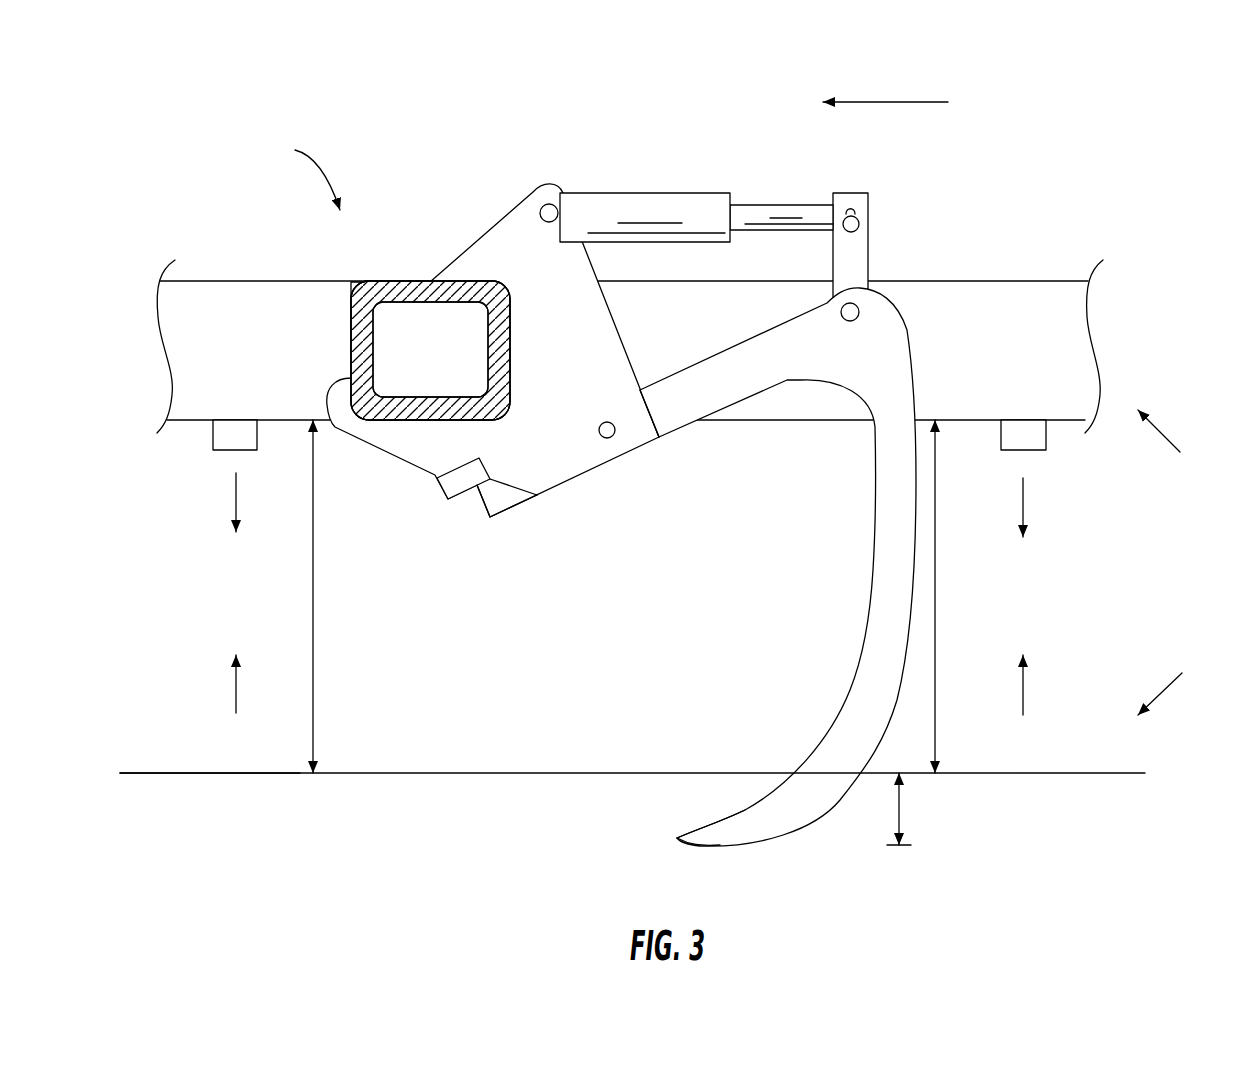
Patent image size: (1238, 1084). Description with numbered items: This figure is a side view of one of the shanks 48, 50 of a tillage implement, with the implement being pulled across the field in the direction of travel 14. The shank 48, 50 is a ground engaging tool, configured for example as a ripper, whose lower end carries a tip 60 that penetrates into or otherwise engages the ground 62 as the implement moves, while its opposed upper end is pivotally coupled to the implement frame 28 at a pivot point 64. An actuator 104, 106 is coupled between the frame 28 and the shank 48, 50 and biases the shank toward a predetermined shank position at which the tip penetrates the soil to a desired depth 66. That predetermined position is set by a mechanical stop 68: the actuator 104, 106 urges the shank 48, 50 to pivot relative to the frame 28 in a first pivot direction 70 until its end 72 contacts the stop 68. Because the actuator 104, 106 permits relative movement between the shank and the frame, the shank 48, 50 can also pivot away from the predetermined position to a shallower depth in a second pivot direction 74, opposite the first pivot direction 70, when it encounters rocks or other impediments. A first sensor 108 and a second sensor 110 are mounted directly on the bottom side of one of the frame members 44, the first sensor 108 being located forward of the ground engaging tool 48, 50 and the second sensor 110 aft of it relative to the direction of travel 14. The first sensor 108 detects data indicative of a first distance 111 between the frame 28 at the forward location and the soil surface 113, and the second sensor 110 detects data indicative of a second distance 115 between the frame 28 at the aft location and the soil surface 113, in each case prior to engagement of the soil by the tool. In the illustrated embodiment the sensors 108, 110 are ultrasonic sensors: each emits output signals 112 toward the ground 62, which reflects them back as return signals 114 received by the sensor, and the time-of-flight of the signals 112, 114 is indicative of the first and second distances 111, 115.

The direction of travel 14 is at (893, 102).
The implement frame 28 is at (301, 172).
The frame member 44 is at (255, 281).
The shank 48 is at (778, 567).
The shank 50 is at (873, 597).
The tip 60 is at (677, 838).
The ground 62 is at (500, 773).
The pivot point 64 is at (613, 437).
The desired depth 66 is at (900, 800).
The mechanical stop 68 is at (450, 497).
The first pivot direction 70 is at (1160, 696).
The end 72 is at (490, 517).
The second pivot direction 74 is at (1160, 432).
The first actuator 104 is at (597, 296).
The second actuator 106 is at (575, 183).
The first sensor 108 is at (213, 433).
The second sensor 110 is at (1040, 450).
The first distance 111 is at (313, 605).
The output signals 112 is at (242, 490).
The soil surface 113 is at (150, 773).
The return signals 114 is at (240, 690).
The second distance 115 is at (935, 607).